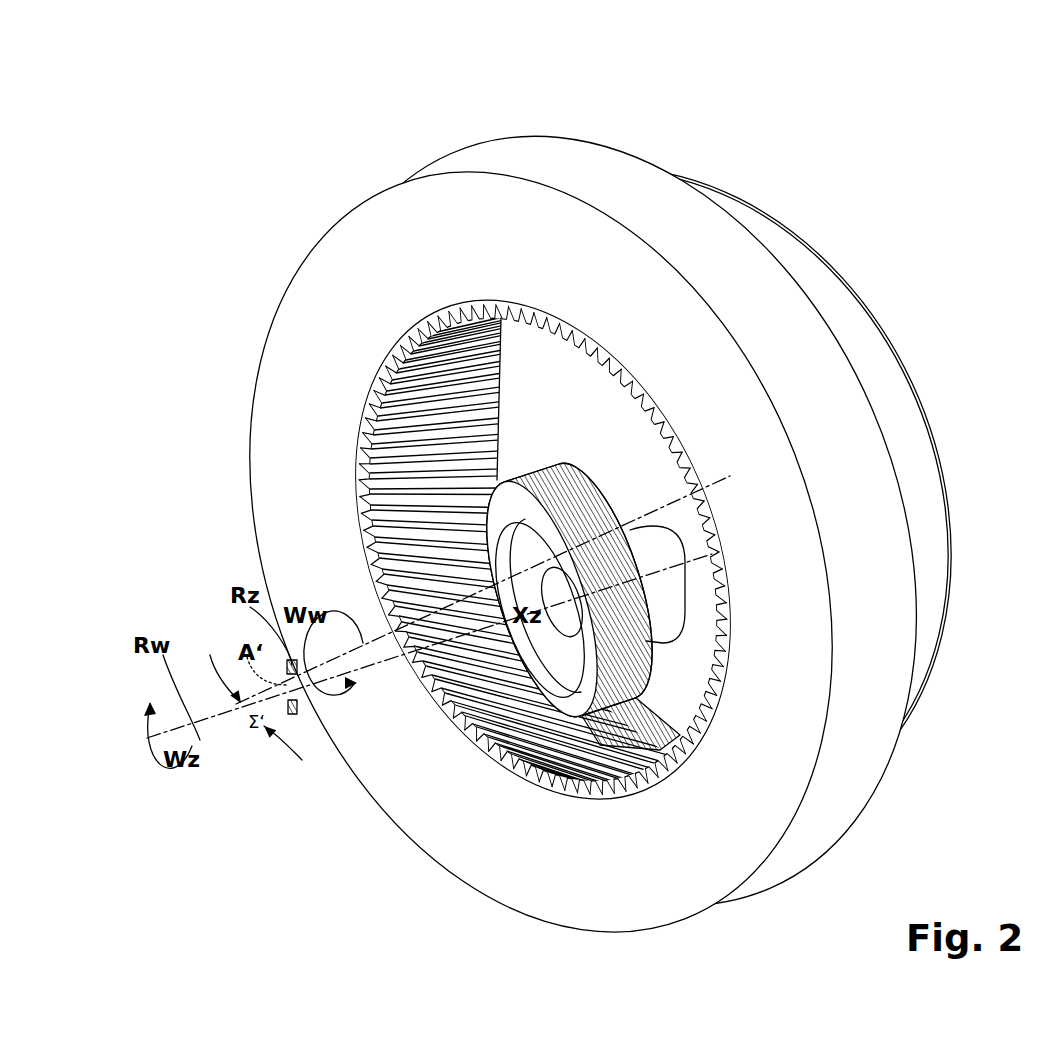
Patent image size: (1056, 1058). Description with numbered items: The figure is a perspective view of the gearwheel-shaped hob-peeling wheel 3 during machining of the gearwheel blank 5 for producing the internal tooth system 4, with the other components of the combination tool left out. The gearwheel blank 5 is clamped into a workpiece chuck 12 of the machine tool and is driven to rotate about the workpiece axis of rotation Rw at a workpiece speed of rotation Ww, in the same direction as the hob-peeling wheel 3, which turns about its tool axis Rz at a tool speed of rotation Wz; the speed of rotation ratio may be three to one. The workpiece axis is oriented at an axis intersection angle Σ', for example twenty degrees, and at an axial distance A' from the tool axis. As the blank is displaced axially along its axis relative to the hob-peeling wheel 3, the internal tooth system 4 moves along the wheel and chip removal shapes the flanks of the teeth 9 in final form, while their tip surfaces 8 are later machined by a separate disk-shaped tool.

The hob-peeling wheel 3 is at (380, 602).
The internal tooth system 4 is at (400, 388).
The gearwheel blank 5 is at (417, 333).
The tip surfaces 8 is at (497, 437).
The teeth 9 is at (360, 487).
The workpiece chuck 12 is at (483, 215).